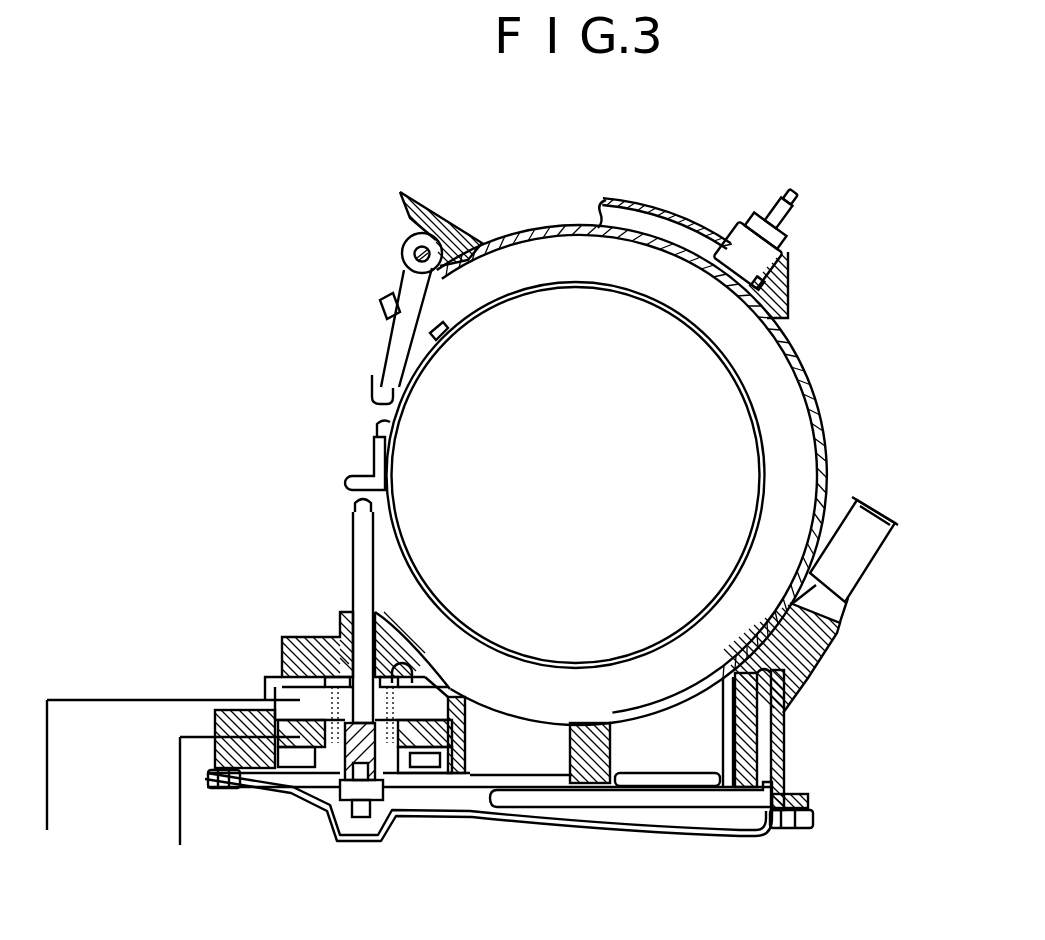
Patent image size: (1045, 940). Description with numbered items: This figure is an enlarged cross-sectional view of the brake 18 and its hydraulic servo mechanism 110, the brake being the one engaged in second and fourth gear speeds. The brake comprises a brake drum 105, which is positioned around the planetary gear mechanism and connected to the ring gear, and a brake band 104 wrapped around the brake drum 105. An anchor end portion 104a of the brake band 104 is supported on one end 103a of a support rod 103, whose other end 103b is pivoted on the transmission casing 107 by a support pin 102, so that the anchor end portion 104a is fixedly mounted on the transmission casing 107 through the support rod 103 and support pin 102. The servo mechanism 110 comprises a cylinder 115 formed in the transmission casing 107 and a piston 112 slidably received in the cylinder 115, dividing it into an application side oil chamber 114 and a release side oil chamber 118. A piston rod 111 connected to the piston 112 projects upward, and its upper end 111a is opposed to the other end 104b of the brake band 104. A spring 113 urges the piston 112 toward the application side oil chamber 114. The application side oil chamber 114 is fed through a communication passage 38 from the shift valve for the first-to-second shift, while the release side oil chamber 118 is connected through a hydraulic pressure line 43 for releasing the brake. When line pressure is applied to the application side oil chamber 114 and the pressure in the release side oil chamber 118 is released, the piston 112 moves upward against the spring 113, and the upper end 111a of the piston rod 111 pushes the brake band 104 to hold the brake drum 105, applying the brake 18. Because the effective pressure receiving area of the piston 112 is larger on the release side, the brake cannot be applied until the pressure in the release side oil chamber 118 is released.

The 2-4 brake 18 is at (530, 204).
The communication passage 38 is at (180, 812).
The hydraulic pressure line 43 is at (47, 778).
The support pin 102 is at (440, 236).
The support rod 103 is at (385, 308).
The one end of support rod 103a is at (372, 382).
The other end of support rod 103b is at (403, 268).
The brake band 104 is at (542, 287).
The anchor end portion of brake band 104a is at (366, 406).
The other end of brake band 104b is at (385, 482).
The brake drum 105 is at (375, 430).
The transmission casing 107 is at (600, 200).
The servo mechanism 110 is at (420, 790).
The piston rod 111 is at (362, 602).
The upper end of piston rod 111a is at (355, 512).
The piston 112 is at (418, 690).
The spring 113 is at (410, 668).
The application side oil chamber 114 is at (300, 789).
The cylinder 115 is at (445, 693).
The release side oil chamber 118 is at (298, 660).